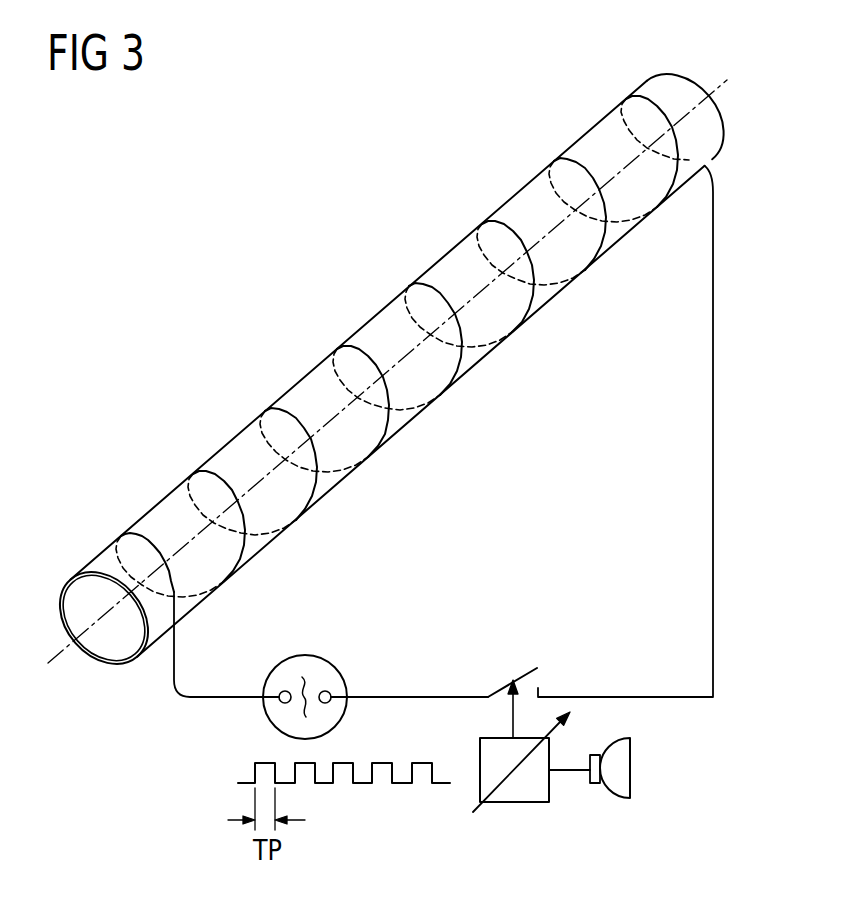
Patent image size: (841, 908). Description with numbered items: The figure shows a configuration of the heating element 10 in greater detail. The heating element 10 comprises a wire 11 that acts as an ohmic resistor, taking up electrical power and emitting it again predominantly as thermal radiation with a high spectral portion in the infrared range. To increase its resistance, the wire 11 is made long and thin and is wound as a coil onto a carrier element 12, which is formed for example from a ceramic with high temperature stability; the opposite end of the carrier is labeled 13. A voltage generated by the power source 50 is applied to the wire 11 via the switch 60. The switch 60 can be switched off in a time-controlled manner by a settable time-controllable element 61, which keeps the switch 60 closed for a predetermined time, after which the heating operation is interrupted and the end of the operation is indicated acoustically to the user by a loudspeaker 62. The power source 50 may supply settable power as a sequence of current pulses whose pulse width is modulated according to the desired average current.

The heating element 10 is at (422, 172).
The wire 11 is at (366, 350).
The carrier element 12 is at (98, 562).
The second tube end 13 is at (718, 84).
The power source 50 is at (317, 668).
The switch 60 is at (515, 685).
The settable time-controllable element 61 is at (513, 807).
The loudspeaker 62 is at (623, 800).